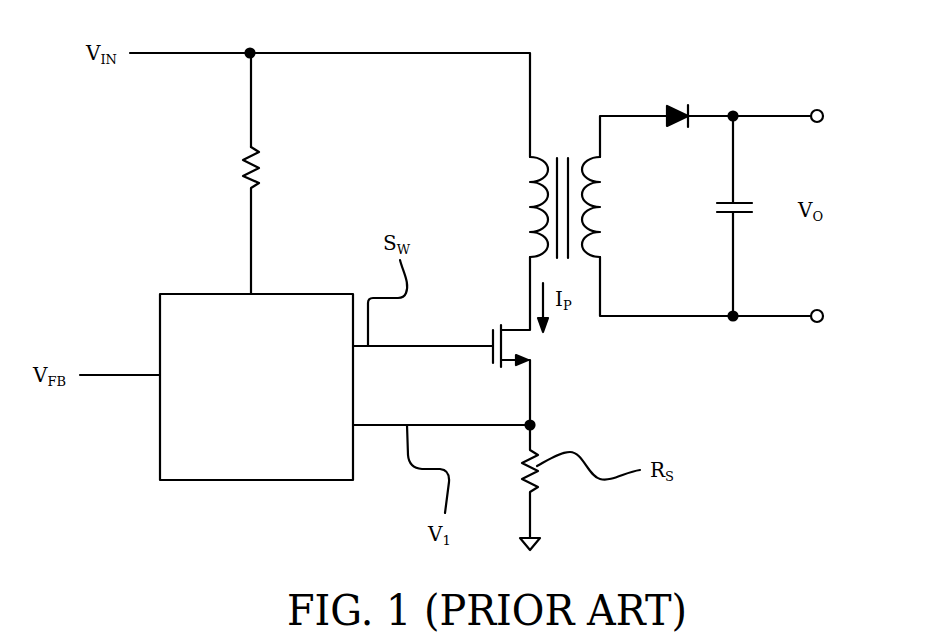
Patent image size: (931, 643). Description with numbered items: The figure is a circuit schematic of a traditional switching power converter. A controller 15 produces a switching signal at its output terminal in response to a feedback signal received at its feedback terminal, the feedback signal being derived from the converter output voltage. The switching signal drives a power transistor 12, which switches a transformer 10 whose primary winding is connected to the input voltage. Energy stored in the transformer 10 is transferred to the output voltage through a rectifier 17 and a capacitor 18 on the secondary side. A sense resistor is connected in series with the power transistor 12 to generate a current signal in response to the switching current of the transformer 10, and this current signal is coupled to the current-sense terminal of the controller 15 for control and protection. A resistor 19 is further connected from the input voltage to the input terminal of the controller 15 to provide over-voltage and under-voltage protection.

The transformer 10 is at (563, 157).
The power transistor 12 is at (493, 338).
The controller 15 is at (185, 294).
The rectifier 17 is at (680, 107).
The capacitor 18 is at (722, 215).
The resistor 19 is at (258, 158).